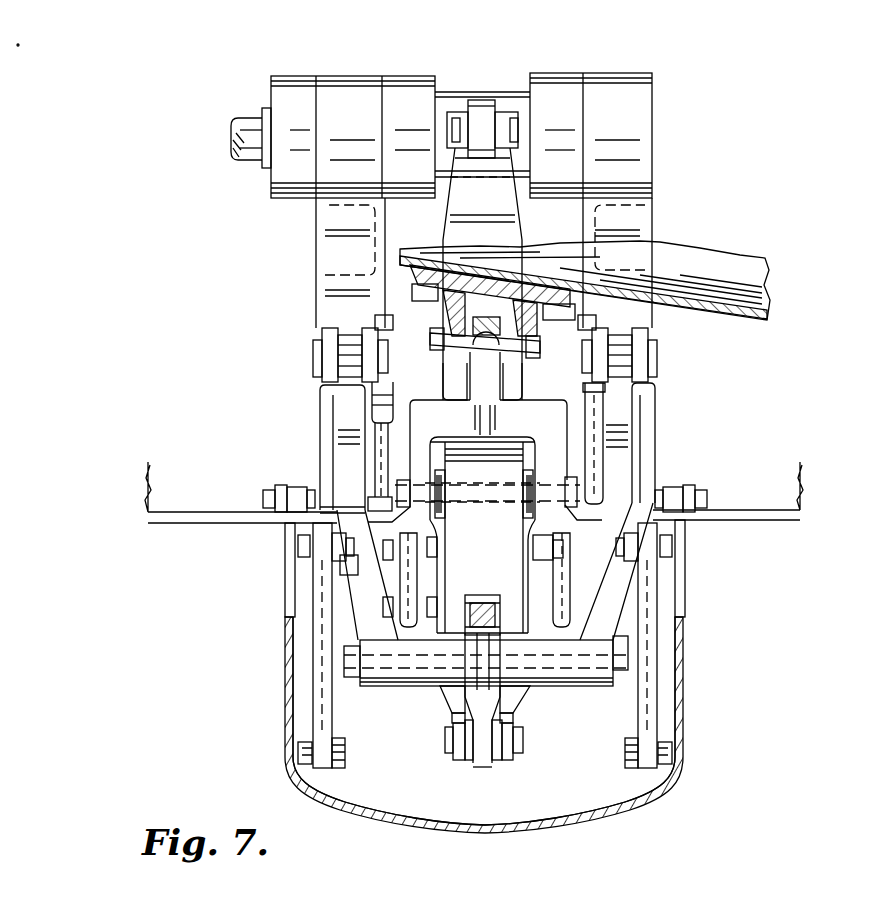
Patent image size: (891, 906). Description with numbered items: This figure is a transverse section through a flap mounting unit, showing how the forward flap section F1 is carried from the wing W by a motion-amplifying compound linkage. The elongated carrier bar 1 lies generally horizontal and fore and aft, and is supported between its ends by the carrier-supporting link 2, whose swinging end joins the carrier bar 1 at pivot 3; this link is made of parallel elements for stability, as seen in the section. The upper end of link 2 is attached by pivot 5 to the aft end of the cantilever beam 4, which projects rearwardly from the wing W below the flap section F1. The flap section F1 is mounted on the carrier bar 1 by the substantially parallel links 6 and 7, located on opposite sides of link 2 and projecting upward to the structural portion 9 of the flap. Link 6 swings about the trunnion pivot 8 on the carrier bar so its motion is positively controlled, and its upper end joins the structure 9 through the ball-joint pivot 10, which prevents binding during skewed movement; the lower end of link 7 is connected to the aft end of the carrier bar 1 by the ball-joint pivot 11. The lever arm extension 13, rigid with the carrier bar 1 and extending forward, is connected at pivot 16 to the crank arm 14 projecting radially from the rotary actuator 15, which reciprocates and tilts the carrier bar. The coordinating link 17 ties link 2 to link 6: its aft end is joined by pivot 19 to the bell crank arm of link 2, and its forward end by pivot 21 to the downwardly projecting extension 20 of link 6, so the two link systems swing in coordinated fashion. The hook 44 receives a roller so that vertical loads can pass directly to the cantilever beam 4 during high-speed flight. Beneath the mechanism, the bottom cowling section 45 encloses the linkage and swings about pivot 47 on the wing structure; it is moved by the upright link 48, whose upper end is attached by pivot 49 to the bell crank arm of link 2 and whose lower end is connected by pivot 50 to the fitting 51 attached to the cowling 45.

The carrier bar 1 is at (520, 690).
The carrier-supporting link 2 is at (345, 410).
The pivot 3 is at (622, 652).
The cantilever beam 4 is at (320, 272).
The pivot 5 is at (318, 358).
The link 6 is at (510, 415).
The link 7 is at (480, 680).
The trunnion pivot 8 is at (630, 455).
The structural portion 9 is at (440, 305).
The pivot 10 is at (525, 325).
The pivot 11 is at (474, 770).
The lever arm extension 13 is at (505, 228).
The crank arm 14 is at (482, 104).
The rotary actuator 15 is at (402, 95).
The pivot 16 is at (520, 128).
The coordinating link 17 is at (400, 573).
The pivot 19 is at (440, 600).
The extension 20 is at (340, 567).
The pivot 21 is at (440, 548).
The hook 44 is at (392, 390).
The bottom cowling section 45 is at (550, 835).
The pivot 47 is at (270, 497).
The upright link 48 is at (316, 648).
The pivot 49 is at (305, 540).
The pivot 50 is at (340, 748).
The fitting 51 is at (306, 790).
The forward flap section F1 is at (770, 296).
The wing W is at (790, 510).